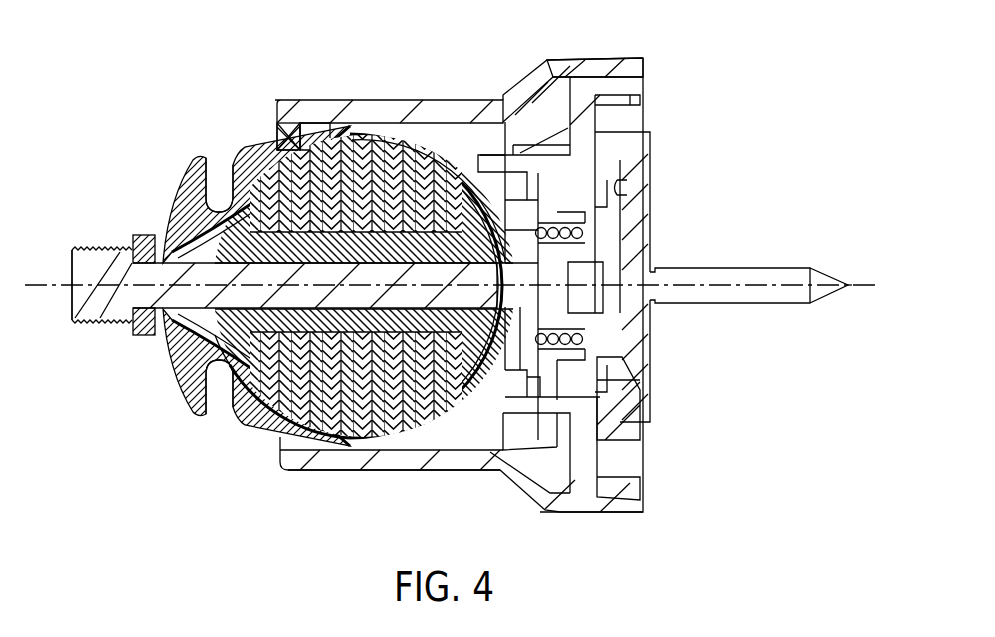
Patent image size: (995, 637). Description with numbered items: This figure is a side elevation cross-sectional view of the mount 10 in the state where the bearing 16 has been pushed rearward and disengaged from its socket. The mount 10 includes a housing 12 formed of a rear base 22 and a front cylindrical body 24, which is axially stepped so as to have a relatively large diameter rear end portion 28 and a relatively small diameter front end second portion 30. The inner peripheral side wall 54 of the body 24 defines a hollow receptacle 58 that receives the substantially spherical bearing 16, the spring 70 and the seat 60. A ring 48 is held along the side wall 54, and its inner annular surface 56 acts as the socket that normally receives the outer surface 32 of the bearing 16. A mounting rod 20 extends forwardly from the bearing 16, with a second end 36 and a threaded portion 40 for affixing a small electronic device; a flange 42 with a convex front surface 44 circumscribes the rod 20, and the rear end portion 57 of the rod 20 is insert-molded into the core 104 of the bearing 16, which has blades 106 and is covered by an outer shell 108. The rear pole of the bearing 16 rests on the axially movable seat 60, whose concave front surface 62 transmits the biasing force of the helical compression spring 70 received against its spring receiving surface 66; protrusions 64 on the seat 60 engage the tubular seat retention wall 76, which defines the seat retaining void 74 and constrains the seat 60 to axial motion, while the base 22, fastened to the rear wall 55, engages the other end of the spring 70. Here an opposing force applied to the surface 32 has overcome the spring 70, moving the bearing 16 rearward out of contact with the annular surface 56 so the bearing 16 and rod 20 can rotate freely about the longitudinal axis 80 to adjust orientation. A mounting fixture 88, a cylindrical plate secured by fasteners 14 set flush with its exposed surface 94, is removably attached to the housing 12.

The mount 10 is at (680, 46).
The housing 12 is at (405, 476).
The fasteners 14 is at (742, 268).
The bearing 16 is at (270, 400).
The mounting rod 20 is at (146, 291).
The rear base 22 is at (594, 122).
The front cylindrical body 24 is at (503, 91).
The rear end portion 28 is at (596, 59).
The front end second portion 30 is at (383, 99).
The outer surface 32 is at (264, 174).
The second end 36 is at (70, 270).
The threaded portion 40 is at (95, 248).
The flange 42 is at (204, 150).
The front surface 44 is at (170, 207).
The ring 48 is at (287, 126).
The inner peripheral side wall 54 is at (326, 140).
The rear wall 55 is at (580, 136).
The inner annular surface 56 is at (296, 134).
The rear end portion 57 is at (207, 362).
The hollow receptacle 58 is at (442, 143).
The seat 60 is at (510, 184).
The concave front surface 62 is at (460, 386).
The protrusions 64 is at (515, 340).
The spring receiving surface 66 is at (532, 356).
The spring 70 is at (580, 312).
The seat retaining void 74 is at (556, 386).
The seat retention wall 76 is at (542, 408).
The longitudinal axis 80 is at (846, 283).
The mounting fixture 88 is at (640, 246).
The exposed surface 94 is at (618, 187).
The core 104 is at (355, 236).
The blades 106 is at (352, 404).
The outer shell 108 is at (246, 382).